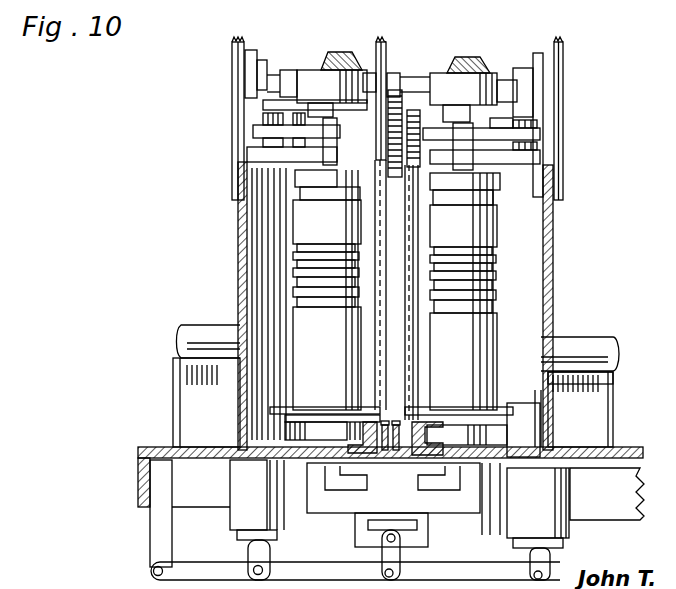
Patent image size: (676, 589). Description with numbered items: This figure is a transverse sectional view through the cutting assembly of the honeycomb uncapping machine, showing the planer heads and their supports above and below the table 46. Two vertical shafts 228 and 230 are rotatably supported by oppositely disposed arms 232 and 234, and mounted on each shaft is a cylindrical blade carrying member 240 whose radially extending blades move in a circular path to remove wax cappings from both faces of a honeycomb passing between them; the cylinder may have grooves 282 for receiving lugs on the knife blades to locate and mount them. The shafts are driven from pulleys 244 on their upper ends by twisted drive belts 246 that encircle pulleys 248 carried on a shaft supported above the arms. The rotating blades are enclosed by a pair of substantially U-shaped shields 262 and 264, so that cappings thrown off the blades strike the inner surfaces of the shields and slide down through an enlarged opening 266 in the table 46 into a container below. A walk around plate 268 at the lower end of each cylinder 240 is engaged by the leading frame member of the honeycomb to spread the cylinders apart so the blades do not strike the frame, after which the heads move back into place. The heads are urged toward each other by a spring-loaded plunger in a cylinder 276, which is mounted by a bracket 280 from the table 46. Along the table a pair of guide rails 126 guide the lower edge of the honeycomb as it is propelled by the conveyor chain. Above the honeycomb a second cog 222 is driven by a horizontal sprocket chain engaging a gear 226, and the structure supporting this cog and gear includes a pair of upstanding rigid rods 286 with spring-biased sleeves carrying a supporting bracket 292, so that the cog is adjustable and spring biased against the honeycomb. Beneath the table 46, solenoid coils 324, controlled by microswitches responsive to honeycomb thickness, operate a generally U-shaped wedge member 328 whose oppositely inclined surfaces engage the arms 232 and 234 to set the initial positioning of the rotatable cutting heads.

The pulleys 244 is at (298, 63).
The pulleys 248 is at (350, 53).
The supporting bracket 292 is at (387, 55).
The second cog 222 is at (402, 88).
The gear 226 is at (430, 70).
The twisted drive belts 246 is at (481, 58).
The upstanding rigid rods 286 is at (563, 60).
The vertical shaft 228 is at (275, 128).
The arm 232 is at (273, 153).
The vertical shaft 230 is at (536, 143).
The arm 234 is at (526, 160).
The U-shaped shield 264 is at (556, 197).
The U-shaped shield 262 is at (240, 224).
The grooves 282 is at (499, 240).
The cylindrical blade carrying member 240 is at (503, 292).
The cylinder 276 is at (202, 333).
The walk around plate 268 is at (606, 391).
The bracket 280 is at (175, 408).
The guide rails 126 is at (430, 413).
The table 46 is at (637, 462).
The enlarged opening 266 is at (562, 470).
The solenoid coils 324 is at (238, 510).
The U-shaped wedge member 328 is at (428, 523).